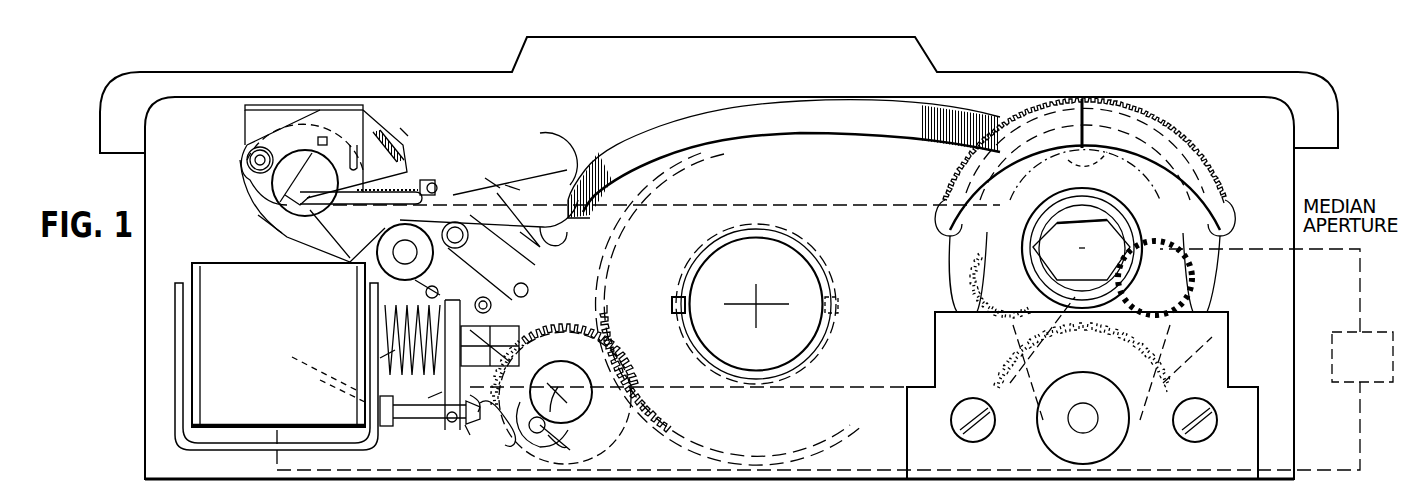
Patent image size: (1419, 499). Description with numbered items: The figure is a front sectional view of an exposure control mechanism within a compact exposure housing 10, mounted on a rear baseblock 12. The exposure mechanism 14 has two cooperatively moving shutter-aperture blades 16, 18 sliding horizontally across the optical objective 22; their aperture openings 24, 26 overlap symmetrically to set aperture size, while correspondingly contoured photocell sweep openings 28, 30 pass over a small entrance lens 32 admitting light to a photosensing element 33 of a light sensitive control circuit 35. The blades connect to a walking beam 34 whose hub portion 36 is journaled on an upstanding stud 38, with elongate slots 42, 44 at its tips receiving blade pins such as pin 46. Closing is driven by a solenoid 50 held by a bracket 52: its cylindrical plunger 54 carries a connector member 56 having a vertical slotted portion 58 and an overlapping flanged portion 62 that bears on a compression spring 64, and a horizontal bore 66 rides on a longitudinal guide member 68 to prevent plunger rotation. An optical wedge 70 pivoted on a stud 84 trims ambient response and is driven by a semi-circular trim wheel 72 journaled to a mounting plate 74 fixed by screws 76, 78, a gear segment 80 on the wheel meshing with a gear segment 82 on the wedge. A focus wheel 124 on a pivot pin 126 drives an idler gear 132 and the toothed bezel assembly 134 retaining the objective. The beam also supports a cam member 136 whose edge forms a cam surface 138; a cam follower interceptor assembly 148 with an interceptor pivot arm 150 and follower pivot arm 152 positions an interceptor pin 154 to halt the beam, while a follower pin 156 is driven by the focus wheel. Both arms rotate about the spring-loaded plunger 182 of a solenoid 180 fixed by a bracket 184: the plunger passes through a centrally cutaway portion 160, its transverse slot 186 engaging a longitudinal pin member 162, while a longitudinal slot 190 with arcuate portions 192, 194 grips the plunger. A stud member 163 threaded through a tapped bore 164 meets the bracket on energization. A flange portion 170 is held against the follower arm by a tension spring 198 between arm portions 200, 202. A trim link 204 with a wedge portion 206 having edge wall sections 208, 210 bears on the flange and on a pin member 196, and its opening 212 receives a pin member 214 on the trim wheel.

The exposure housing 10 is at (1226, 62).
The rear baseblock 12 is at (1352, 112).
The exposure mechanism 14 is at (553, 174).
The shutter-aperture blade 16 is at (610, 420).
The shutter-aperture blade 18 is at (540, 136).
The optical objective 22 is at (756, 301).
The aperture opening 24 is at (840, 297).
The aperture opening 26 is at (680, 300).
The photocell sweep opening 28 is at (1212, 262).
The photocell sweep opening 30 is at (985, 255).
The entrance lens 32 is at (1132, 312).
The photosensing element 33 is at (1078, 212).
The walking beam 34 is at (520, 443).
The light sensitive control circuit 35 is at (1362, 333).
The hub portion 36 is at (521, 356).
The stud 38 is at (489, 346).
The elongate slot 42 is at (520, 440).
The elongate slot 44 is at (436, 185).
The pin 46 is at (567, 447).
The solenoid 50 is at (203, 458).
The bracket 52 is at (258, 453).
The cylindrical plunger 54 is at (442, 393).
The connector member 56 is at (440, 398).
The vertical slotted portion 58 is at (478, 420).
The overlapping flanged portion 62 is at (452, 423).
The compression spring 64 is at (392, 362).
The horizontal bore 66 is at (466, 430).
The longitudinal guide member 68 is at (407, 422).
The optical wedge 70 is at (1175, 364).
The trim wheel 72 is at (1218, 187).
The mounting plate 74 is at (1232, 335).
The screw 76 is at (968, 438).
The screw 78 is at (1200, 435).
The gear segment 80 is at (1013, 312).
The gear segment 82 is at (1015, 370).
The stud 84 is at (1095, 432).
The focus wheel 124 is at (322, 379).
The pivot pin 126 is at (393, 270).
The idler gear 132 is at (592, 332).
The bezel assembly 134 is at (690, 432).
The cam member 136 is at (548, 265).
The cam surface 138 is at (515, 240).
The cam follower interceptor assembly 148 is at (407, 131).
The interceptor pivot arm 150 is at (363, 140).
The follower pivot arm 152 is at (283, 150).
The interceptor pin 154 is at (529, 290).
The follower pin 156 is at (432, 183).
The centrally cutaway portion 160 is at (392, 134).
The longitudinal pin member 162 is at (290, 186).
The stud member 163 is at (260, 150).
The tapped bore 164 is at (250, 158).
The flange portion 170 is at (455, 222).
The solenoid 180 is at (322, 130).
The spring-loaded plunger 182 is at (285, 200).
The bracket 184 is at (243, 125).
The transverse slot 186 is at (273, 226).
The longitudinal slot 190 is at (348, 260).
The arcuate portion 192 is at (300, 172).
The arcuate portion 194 is at (305, 226).
The pin member 196 is at (485, 205).
The tension spring 198 is at (426, 294).
The arm portion 200 is at (395, 332).
The arm portion 202 is at (400, 283).
The trim link 204 is at (880, 138).
The wedge portion 206 is at (491, 183).
The edge wall section 208 is at (505, 186).
The edge wall section 210 is at (566, 244).
The opening 212 is at (1082, 150).
The pin member 214 is at (1070, 170).